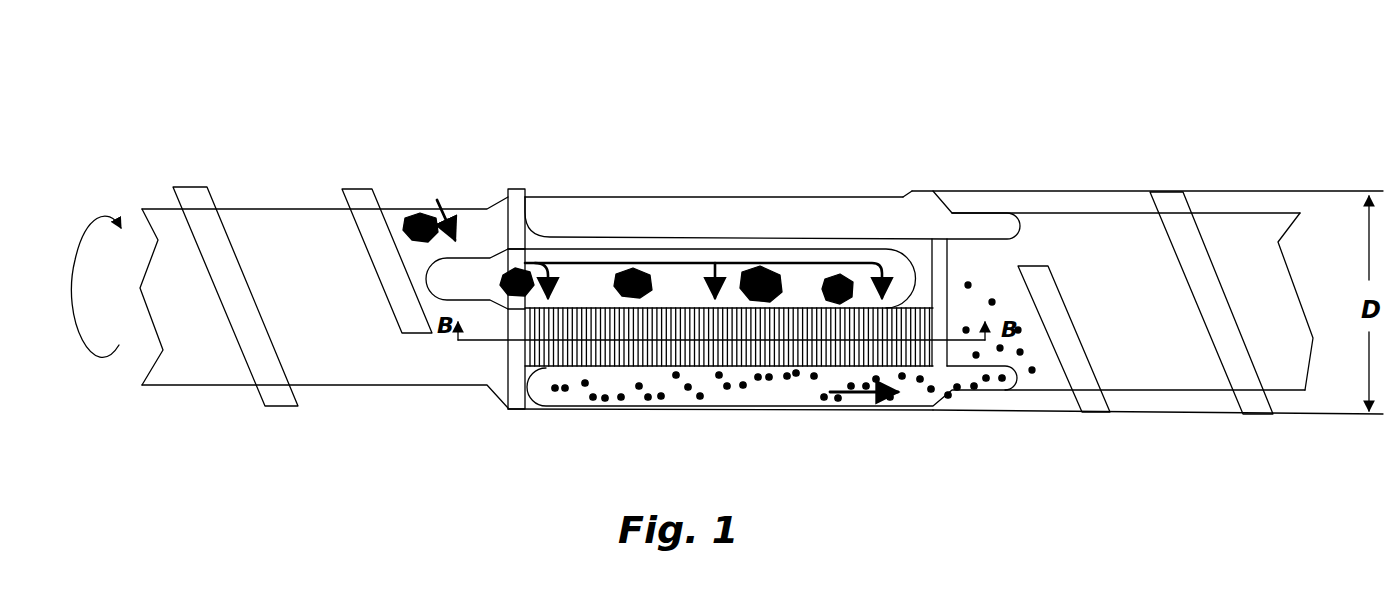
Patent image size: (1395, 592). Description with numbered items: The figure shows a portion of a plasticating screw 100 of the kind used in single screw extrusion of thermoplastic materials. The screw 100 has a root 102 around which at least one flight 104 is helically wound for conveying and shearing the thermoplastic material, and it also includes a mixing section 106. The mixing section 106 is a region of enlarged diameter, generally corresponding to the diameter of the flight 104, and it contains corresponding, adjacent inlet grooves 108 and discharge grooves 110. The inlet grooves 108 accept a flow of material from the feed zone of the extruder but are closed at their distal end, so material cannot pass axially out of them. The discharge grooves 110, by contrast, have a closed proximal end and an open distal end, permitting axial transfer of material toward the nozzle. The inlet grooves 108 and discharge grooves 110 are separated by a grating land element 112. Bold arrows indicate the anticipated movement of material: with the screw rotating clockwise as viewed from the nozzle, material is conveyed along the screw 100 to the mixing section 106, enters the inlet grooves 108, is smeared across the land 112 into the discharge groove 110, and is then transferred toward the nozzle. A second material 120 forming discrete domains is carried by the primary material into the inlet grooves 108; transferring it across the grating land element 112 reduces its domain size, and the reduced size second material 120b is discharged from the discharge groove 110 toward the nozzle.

The plasticating screw 100 is at (267, 86).
The root 102 is at (255, 213).
The flight 104 is at (280, 406).
The mixing section 106 is at (738, 188).
The inlet groove 108 is at (900, 272).
The discharge groove 110 is at (543, 390).
The grating land element 112 is at (925, 345).
The second material 120 is at (410, 213).
The reduced size second material 120b is at (787, 402).